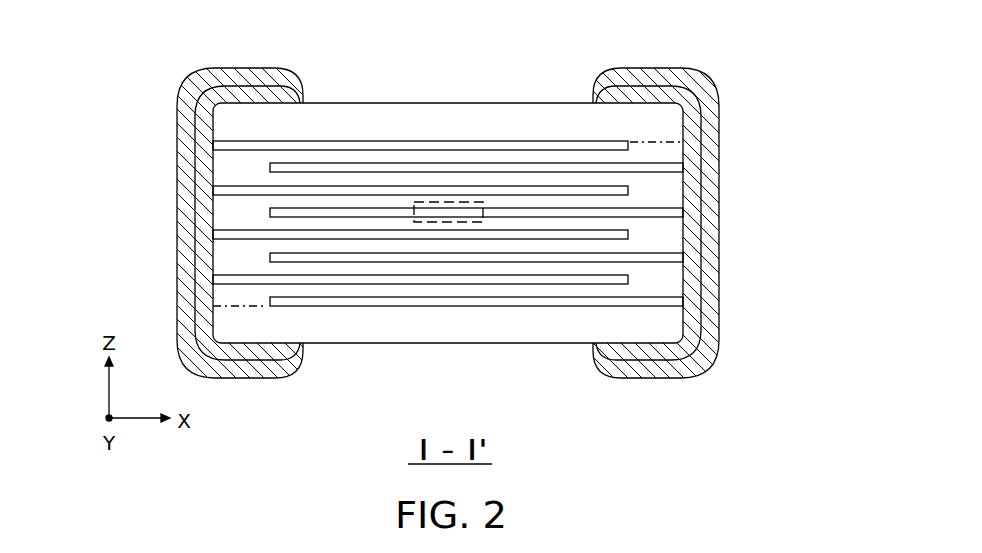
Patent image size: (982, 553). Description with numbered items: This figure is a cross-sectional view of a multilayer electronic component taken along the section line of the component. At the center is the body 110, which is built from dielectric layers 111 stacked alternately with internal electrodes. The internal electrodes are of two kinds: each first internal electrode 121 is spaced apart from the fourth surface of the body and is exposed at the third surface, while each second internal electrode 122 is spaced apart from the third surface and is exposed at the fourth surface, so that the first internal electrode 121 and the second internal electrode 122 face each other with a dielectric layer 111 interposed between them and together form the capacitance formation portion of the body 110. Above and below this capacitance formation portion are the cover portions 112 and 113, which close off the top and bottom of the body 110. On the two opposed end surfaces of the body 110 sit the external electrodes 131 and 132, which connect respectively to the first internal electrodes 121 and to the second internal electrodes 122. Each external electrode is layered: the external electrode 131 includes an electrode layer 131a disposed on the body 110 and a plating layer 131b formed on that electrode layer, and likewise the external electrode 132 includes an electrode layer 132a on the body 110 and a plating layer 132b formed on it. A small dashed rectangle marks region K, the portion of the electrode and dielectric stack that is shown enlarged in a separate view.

The body 110 is at (382, 103).
The dielectric layer 111 is at (343, 178).
The cover portion 112 is at (455, 115).
The cover portion 113 is at (365, 328).
The first internal electrode 121 is at (517, 141).
The second internal electrode 122 is at (576, 165).
The external electrode 131 is at (300, 223).
The electrode layer 131a is at (195, 153).
The plating layer 131b is at (177, 179).
The external electrode 132 is at (636, 223).
The electrode layer 132a is at (700, 132).
The plating layer 132b is at (715, 155).
The region K is at (452, 222).